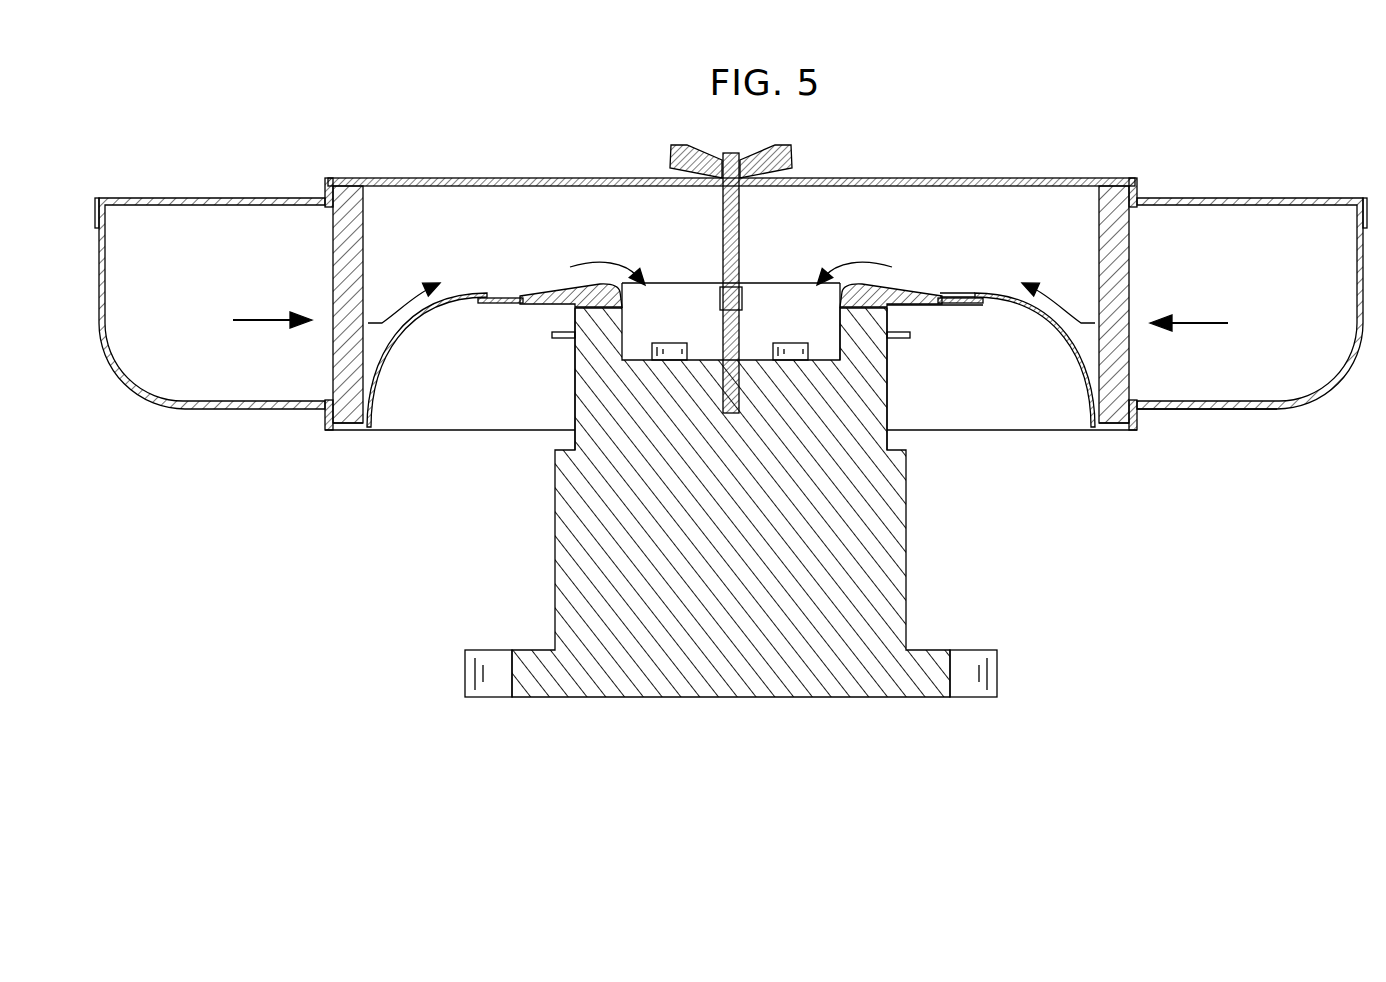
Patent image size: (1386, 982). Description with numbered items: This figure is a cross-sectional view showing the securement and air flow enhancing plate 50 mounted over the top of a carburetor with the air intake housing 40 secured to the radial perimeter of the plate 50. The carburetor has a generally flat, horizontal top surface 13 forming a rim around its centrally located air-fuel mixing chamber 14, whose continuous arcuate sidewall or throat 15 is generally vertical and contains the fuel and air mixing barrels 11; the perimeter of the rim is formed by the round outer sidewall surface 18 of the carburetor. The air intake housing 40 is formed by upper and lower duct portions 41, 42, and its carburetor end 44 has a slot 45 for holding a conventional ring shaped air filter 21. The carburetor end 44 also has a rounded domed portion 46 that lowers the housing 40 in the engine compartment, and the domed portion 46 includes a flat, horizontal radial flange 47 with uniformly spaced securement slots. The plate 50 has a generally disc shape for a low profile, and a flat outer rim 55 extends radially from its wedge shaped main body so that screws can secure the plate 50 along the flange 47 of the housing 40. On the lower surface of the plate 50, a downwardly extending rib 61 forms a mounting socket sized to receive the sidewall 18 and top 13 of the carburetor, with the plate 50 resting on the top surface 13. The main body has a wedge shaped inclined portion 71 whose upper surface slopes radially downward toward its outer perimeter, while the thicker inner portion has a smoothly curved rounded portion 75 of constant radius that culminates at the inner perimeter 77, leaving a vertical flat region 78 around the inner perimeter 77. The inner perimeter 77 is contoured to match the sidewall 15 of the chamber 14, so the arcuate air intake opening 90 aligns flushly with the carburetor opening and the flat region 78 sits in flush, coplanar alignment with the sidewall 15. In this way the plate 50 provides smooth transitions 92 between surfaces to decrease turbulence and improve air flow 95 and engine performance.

The fuel and air mixing barrel 11 is at (662, 343).
The top surface 13 is at (876, 345).
The air-fuel mixing chamber 14 is at (560, 340).
The sidewall or throat 15 is at (838, 333).
The outer sidewall surface 18 is at (575, 398).
The air filter 21 is at (345, 263).
The air intake housing 40 is at (1078, 170).
The upper duct portion 41 is at (1243, 412).
The lower duct portion 42 is at (1305, 200).
The carburetor end 44 is at (992, 178).
The slot 45 is at (1113, 432).
The domed portion 46 is at (1058, 333).
The radial flange 47 is at (967, 293).
The securement and air flow enhancing plate 50 is at (903, 290).
The flat outer rim 55 is at (960, 306).
The rib 61 is at (897, 326).
The inclined portion 71 is at (905, 295).
The rounded portion 75 is at (818, 298).
The inner perimeter 77 is at (765, 292).
The vertical flat region 78 is at (836, 358).
The air intake opening 90 is at (685, 290).
The smooth transitions 92 is at (522, 293).
The air flow 95 is at (585, 263).